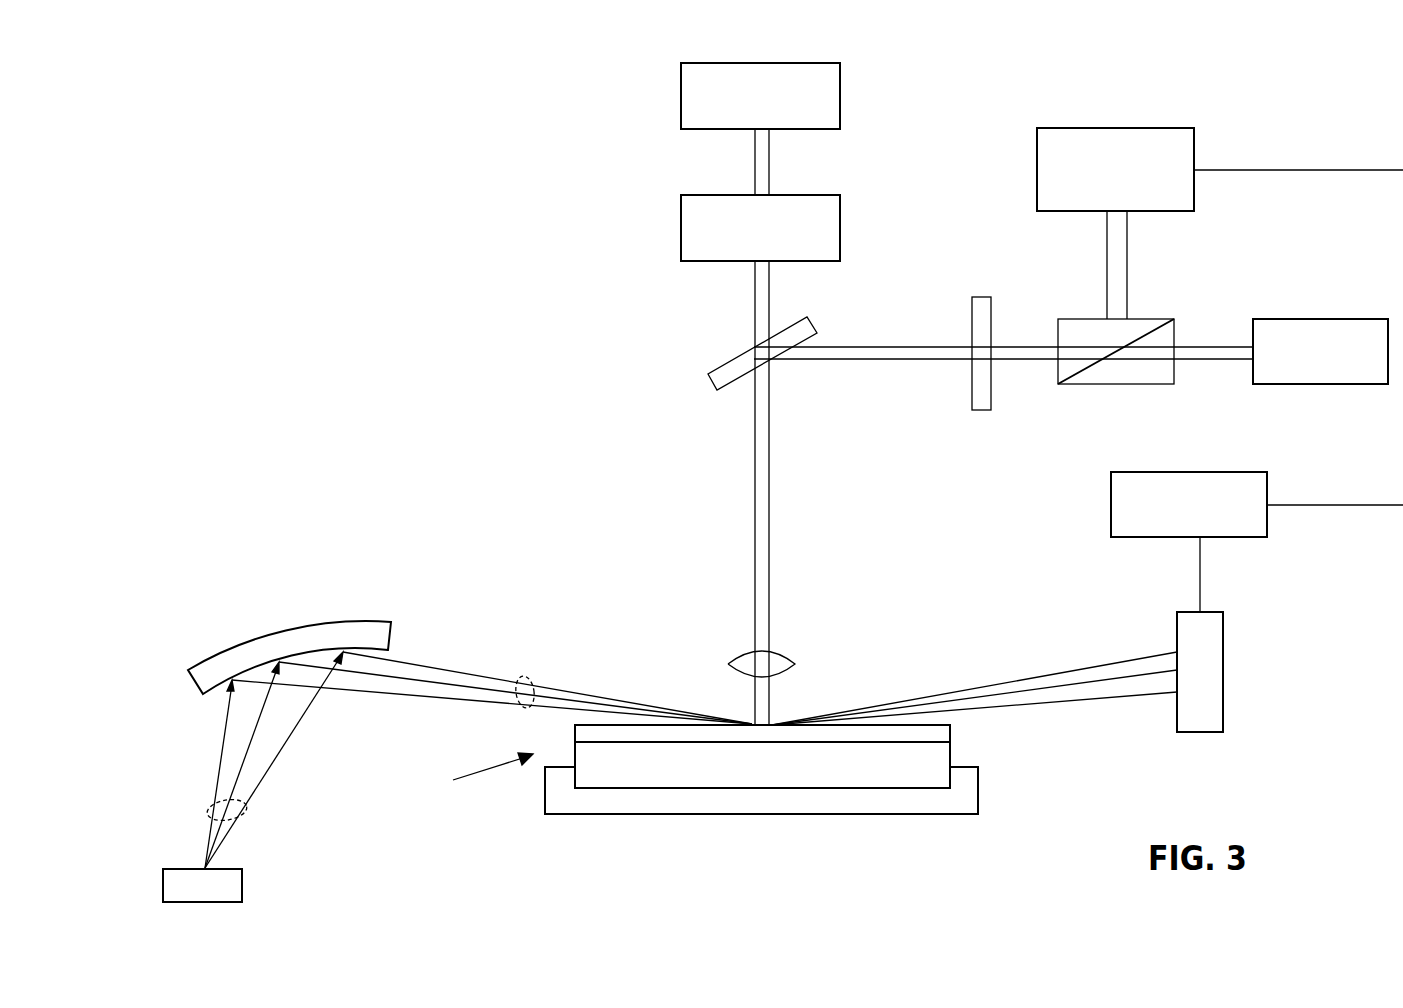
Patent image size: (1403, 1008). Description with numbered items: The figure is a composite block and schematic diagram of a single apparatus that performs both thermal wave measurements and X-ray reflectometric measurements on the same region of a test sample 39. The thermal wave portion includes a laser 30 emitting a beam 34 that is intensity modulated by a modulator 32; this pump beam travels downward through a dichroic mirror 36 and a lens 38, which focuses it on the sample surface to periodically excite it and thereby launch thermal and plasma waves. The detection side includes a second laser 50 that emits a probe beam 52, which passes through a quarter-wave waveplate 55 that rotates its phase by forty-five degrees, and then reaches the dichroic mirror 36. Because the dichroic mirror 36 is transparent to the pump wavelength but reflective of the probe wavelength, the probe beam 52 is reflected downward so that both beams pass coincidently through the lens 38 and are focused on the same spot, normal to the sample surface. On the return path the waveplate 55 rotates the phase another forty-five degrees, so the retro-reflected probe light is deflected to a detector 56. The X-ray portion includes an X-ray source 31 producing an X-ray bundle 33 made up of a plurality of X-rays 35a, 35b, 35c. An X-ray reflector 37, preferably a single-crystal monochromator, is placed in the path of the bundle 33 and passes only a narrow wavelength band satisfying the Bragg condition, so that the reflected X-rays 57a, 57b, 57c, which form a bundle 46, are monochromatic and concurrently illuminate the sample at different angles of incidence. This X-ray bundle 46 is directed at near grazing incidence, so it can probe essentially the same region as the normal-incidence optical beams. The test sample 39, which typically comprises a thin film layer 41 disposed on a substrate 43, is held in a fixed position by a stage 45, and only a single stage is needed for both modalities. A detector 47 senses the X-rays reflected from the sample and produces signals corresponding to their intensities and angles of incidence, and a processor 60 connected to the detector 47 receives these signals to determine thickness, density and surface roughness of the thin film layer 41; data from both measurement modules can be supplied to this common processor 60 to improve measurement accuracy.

The laser 30 is at (840, 100).
The modulator 32 is at (840, 222).
The beam 34 is at (769, 169).
The dichroic mirror 36 is at (733, 353).
The lens 38 is at (735, 668).
The X-ray source 31 is at (243, 885).
The X-ray bundle 33 is at (247, 812).
The X-ray 35a is at (305, 712).
The X-ray 35b is at (247, 753).
The X-ray 35c is at (222, 757).
The X-ray reflector 37 is at (245, 640).
The test sample 39 is at (476, 775).
The thin film layer 41 is at (945, 731).
The substrate 43 is at (950, 757).
The stage 45 is at (970, 805).
The bundle 46 is at (517, 704).
The detector 47 is at (1183, 633).
The laser 50 is at (1319, 319).
The probe beam 52 is at (1200, 344).
The ¼λ-waveplate 55 is at (982, 297).
The detector 56 is at (1194, 138).
The reflected X-ray 57a is at (417, 658).
The reflected X-ray 57b is at (455, 678).
The reflected X-ray 57c is at (485, 697).
The processor 60 is at (1111, 489).